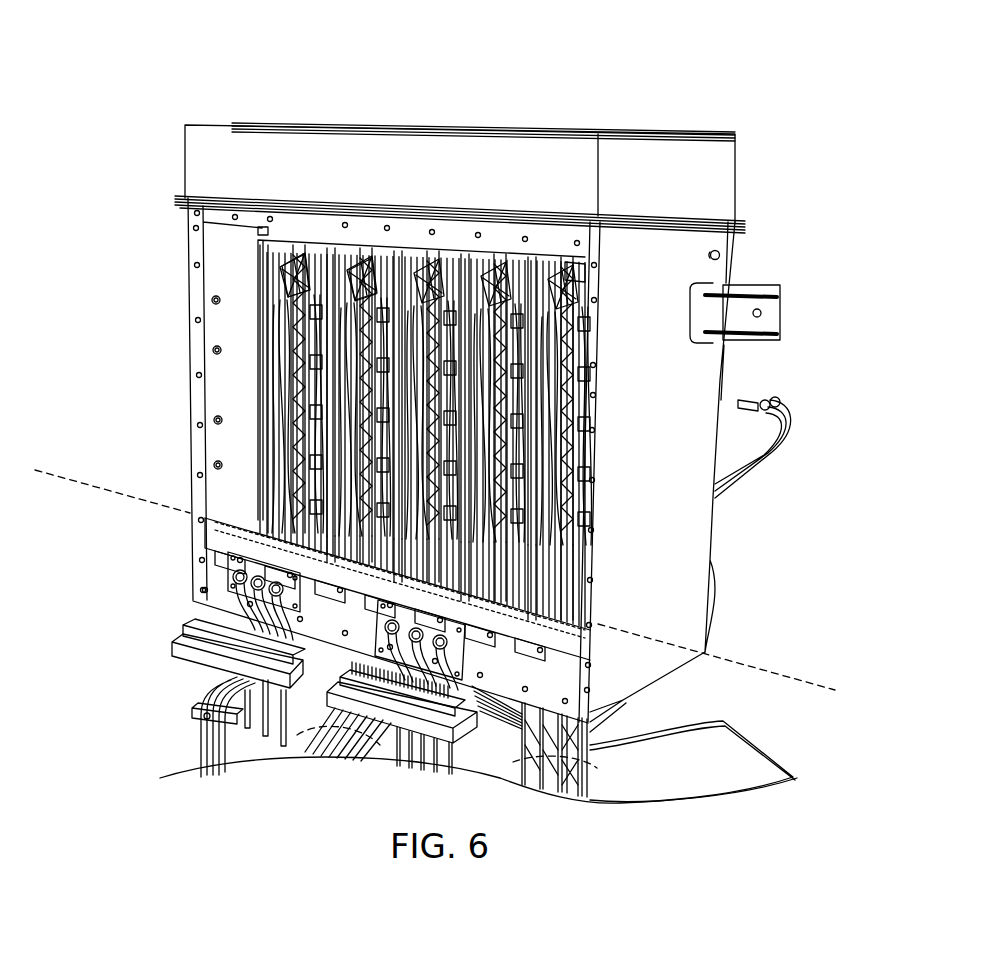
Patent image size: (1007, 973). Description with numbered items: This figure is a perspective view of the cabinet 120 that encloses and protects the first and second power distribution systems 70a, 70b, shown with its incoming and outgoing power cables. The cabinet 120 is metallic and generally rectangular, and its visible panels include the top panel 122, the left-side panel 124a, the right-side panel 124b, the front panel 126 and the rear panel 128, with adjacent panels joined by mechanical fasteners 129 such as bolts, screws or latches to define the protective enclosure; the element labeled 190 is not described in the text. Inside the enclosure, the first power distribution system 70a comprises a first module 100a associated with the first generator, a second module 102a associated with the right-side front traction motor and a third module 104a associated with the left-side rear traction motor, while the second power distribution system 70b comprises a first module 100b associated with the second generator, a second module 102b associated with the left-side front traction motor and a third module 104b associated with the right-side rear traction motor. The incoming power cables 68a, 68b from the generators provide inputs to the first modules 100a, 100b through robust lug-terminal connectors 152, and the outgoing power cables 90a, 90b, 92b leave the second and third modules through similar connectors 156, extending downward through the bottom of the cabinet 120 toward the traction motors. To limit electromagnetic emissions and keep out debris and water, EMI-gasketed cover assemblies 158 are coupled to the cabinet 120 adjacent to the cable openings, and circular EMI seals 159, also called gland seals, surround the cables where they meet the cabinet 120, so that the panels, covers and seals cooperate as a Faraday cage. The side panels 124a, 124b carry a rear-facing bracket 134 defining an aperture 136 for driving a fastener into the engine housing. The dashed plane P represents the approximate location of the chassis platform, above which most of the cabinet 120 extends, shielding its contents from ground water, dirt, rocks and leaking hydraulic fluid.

The cabinet 120 is at (495, 132).
The rear panel 190 is at (606, 165).
The top panel 122 is at (747, 223).
The first power distribution system 70a is at (643, 447).
The second power distribution system 70b is at (180, 399).
The left-side panel 124a is at (668, 506).
The right-side panel 124b is at (227, 343).
The second module 102a is at (578, 278).
The second module 102b is at (404, 272).
The first module 100a is at (534, 275).
The first module 100b is at (327, 356).
The third module 104a is at (476, 282).
The third module 104b is at (267, 344).
The connectors 152 is at (334, 258).
The connectors 156 is at (286, 266).
The bracket 134 is at (768, 322).
The aperture 136 is at (770, 320).
The rear panel 128 is at (722, 380).
The front panel 126 is at (518, 617).
The mechanical fasteners 129 is at (200, 543).
The first power cable 68a is at (415, 687).
The second power cable 68b is at (232, 612).
The EMI-gasketed cover assemblies 158 is at (462, 631).
The circular EMI seals 159 is at (453, 649).
The power cable 92b is at (198, 745).
The power cable 90a is at (331, 766).
The power cable 90b is at (556, 799).
The plane P is at (805, 682).